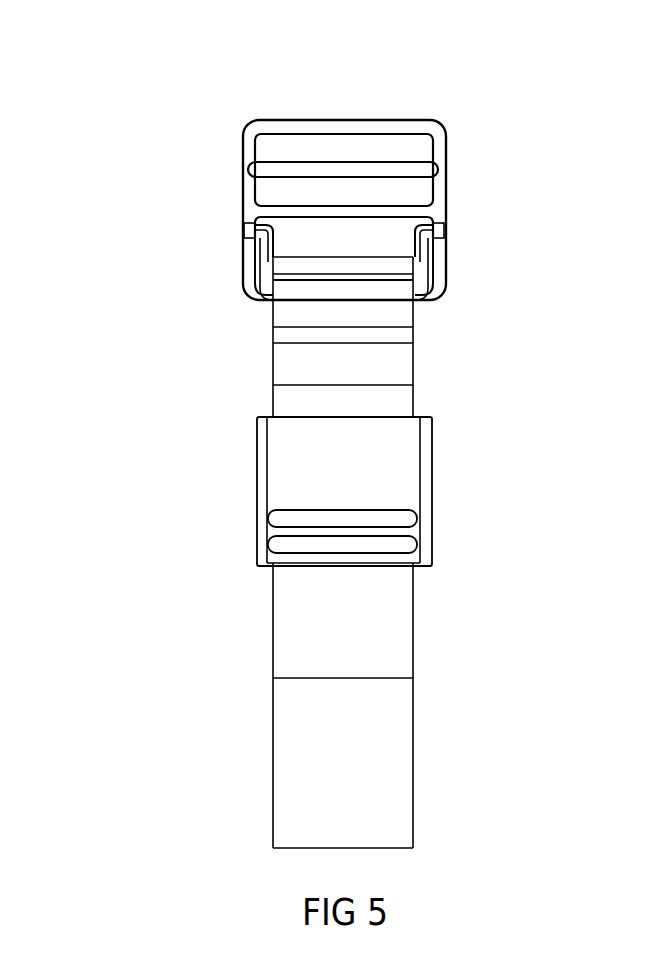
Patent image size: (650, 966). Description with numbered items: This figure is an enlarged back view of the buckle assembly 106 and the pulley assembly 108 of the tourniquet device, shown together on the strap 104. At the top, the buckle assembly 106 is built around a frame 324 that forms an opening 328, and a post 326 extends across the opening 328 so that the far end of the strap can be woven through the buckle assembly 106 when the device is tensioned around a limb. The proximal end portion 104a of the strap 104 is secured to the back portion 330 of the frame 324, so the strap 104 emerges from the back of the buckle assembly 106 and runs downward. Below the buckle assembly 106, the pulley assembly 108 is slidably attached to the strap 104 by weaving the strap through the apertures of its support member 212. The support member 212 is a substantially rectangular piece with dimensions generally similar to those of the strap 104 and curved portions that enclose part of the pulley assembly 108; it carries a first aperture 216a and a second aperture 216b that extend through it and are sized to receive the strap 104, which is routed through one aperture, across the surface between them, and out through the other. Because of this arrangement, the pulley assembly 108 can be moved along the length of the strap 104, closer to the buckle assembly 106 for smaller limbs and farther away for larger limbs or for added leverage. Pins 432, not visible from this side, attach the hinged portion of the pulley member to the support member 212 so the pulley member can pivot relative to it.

The strap 104 is at (322, 552).
The proximal end portion 104a is at (521, 337).
The buckle assembly 106 is at (329, 155).
The pulley assembly 108 is at (472, 453).
The support member 212 is at (233, 470).
The first aperture 216a is at (228, 575).
The second aperture 216b is at (228, 493).
The frame 324 is at (237, 143).
The post 326 is at (388, 108).
The opening 328 is at (417, 168).
The back portion 330 is at (268, 156).
The pins 432 is at (521, 490).